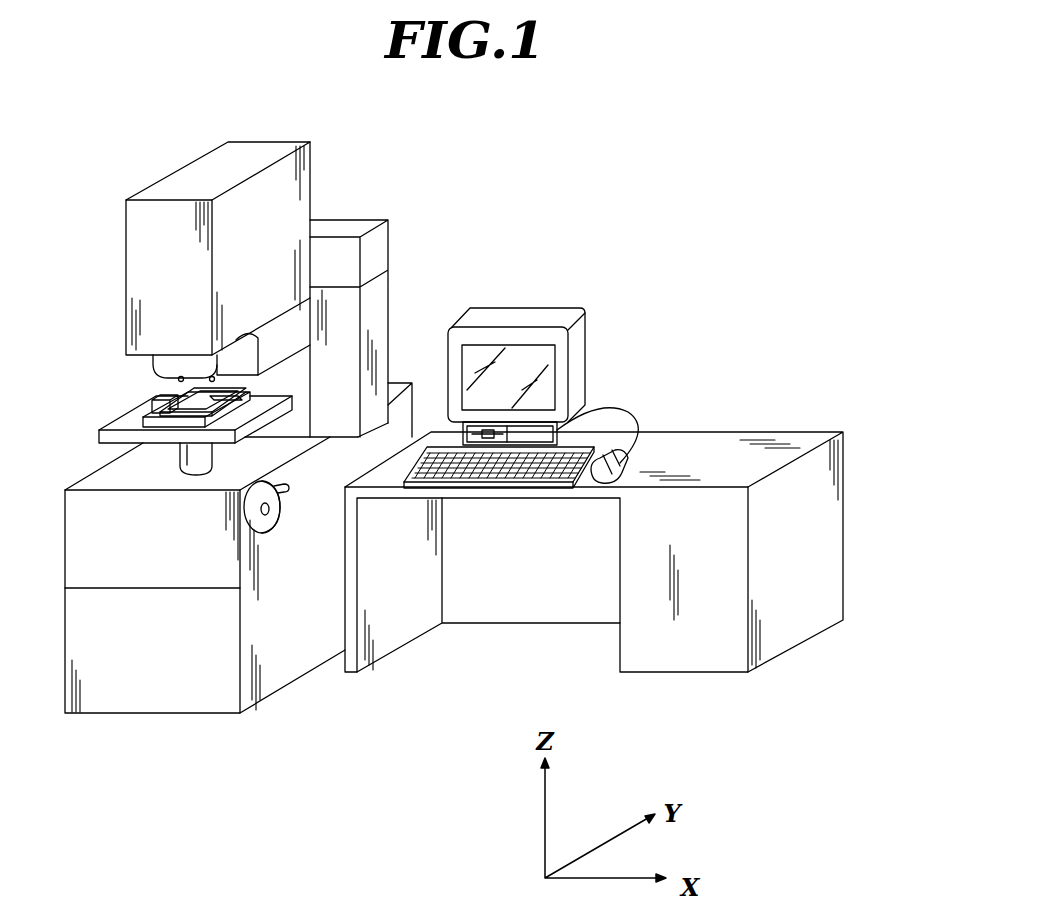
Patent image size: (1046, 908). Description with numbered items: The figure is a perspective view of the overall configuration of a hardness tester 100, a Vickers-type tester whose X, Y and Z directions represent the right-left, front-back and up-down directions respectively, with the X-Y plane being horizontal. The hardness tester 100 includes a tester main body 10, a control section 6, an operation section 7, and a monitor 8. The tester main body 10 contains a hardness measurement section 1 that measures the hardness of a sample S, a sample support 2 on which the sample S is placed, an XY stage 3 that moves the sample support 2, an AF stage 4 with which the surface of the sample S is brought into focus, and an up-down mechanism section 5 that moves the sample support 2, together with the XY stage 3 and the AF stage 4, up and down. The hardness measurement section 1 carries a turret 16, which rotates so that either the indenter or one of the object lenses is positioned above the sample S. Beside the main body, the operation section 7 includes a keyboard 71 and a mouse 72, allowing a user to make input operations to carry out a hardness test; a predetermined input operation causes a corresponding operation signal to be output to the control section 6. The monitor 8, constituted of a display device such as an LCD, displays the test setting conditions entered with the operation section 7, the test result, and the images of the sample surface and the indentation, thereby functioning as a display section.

The hardness tester 100 is at (589, 162).
The tester main body 10 is at (419, 211).
The hardness measurement section 1 is at (197, 182).
The turret 16 is at (183, 362).
The sample S is at (183, 405).
The sample support 2 is at (150, 412).
The AF stage 4 is at (146, 425).
The XY stage 3 is at (97, 435).
The up-down mechanism section 5 is at (193, 463).
The monitor 8 is at (527, 315).
The control section 6 is at (566, 430).
The operation section 7 is at (478, 556).
The keyboard 71 is at (483, 482).
The mouse 72 is at (593, 484).